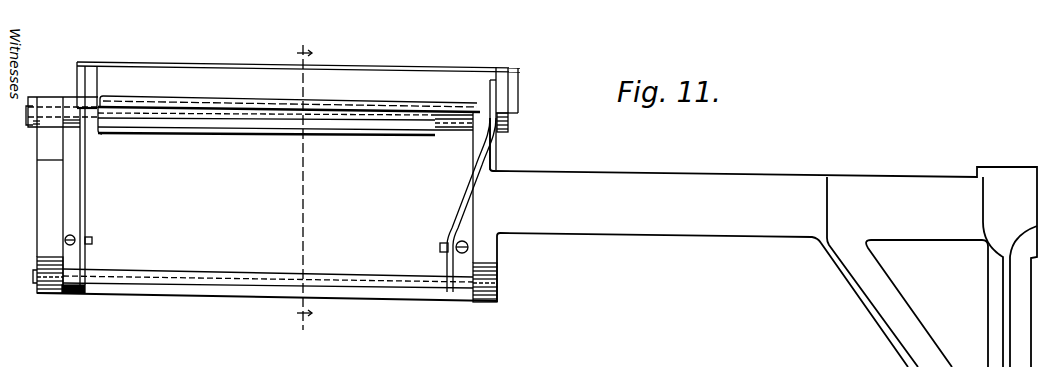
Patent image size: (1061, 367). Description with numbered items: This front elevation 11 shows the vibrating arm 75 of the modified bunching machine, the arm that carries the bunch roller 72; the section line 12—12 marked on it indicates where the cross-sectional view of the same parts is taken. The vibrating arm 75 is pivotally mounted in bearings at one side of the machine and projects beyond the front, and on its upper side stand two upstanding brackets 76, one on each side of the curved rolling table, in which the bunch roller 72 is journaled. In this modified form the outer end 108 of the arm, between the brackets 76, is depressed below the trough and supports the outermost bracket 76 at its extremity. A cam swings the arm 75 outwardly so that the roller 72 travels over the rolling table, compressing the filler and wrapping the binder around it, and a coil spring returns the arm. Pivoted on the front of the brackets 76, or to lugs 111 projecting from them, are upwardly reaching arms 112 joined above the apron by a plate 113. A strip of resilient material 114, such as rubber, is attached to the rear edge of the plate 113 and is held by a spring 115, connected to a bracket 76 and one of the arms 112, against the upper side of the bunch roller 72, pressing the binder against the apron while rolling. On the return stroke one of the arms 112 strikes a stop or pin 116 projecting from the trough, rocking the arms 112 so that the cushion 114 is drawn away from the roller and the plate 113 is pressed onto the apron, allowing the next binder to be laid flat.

The carriage 11 is at (161, 235).
The section line 12- 12 is at (303, 189).
The bunch roller 72 is at (236, 136).
The vibrating arm 75 is at (763, 242).
The upstanding brackets 76 is at (476, 142).
The outer end of the arm 108 is at (261, 295).
The lugs 111 is at (37, 266).
The upwardly reaching arms 112 is at (87, 183).
The plate 113 is at (298, 76).
The strip of resilient material 114 is at (360, 106).
The spring 115 is at (466, 242).
The stop or pin 116 is at (440, 246).